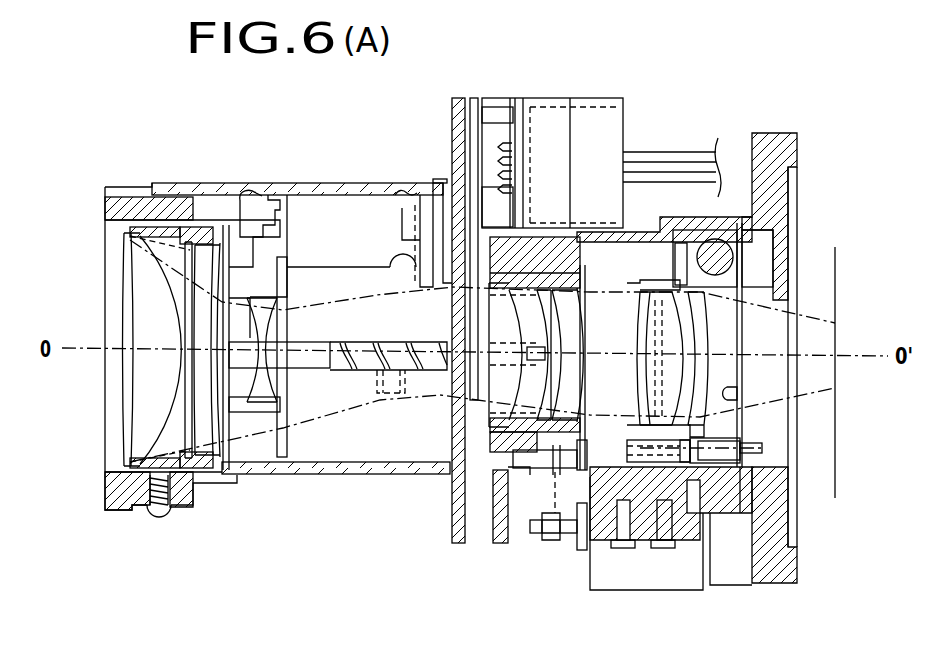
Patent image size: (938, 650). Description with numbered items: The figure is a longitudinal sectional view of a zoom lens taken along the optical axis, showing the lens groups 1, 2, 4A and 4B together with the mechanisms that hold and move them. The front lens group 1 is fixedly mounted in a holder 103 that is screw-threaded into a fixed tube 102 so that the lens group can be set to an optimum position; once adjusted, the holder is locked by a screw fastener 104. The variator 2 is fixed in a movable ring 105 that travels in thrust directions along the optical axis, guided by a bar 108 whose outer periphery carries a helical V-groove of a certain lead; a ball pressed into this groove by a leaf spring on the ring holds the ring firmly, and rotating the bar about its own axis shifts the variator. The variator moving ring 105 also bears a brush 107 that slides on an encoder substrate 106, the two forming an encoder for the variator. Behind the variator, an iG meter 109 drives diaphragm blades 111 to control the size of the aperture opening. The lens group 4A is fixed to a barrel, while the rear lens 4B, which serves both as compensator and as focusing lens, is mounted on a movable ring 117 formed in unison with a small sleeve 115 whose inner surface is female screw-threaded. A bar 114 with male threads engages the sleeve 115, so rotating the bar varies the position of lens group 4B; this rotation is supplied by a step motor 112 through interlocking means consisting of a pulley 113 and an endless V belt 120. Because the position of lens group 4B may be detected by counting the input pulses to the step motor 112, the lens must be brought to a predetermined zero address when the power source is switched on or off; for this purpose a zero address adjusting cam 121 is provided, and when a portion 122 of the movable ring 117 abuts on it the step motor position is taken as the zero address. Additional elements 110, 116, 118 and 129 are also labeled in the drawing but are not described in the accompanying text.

The lens group 1 is at (153, 389).
The variator 2 is at (247, 325).
The lens group 4A is at (470, 316).
The lens (RR) 4B is at (663, 333).
The fixed tube 102 is at (118, 497).
The holder 103 is at (207, 483).
The screw fastener 104 is at (165, 513).
The movable ring 105 is at (283, 447).
The encoder substrate 106 is at (206, 181).
The brush 107 is at (278, 200).
The bar 108 is at (357, 360).
The iG meter 109 is at (605, 118).
The engagement member 110 is at (403, 180).
The diaphragm blades 111 is at (473, 518).
The step motor 112 is at (612, 565).
The pulley 113 is at (548, 540).
The bar 114 is at (597, 450).
The small sleeve 115 is at (717, 437).
The bolt 116 is at (667, 450).
The movable ring 117 is at (657, 280).
The motor shaft 118 is at (633, 233).
The endless V belt 120 is at (547, 483).
The 0 address adjusting cam 121 is at (733, 260).
The portion of the movable ring 122 is at (680, 247).
The image plane 129 is at (837, 293).